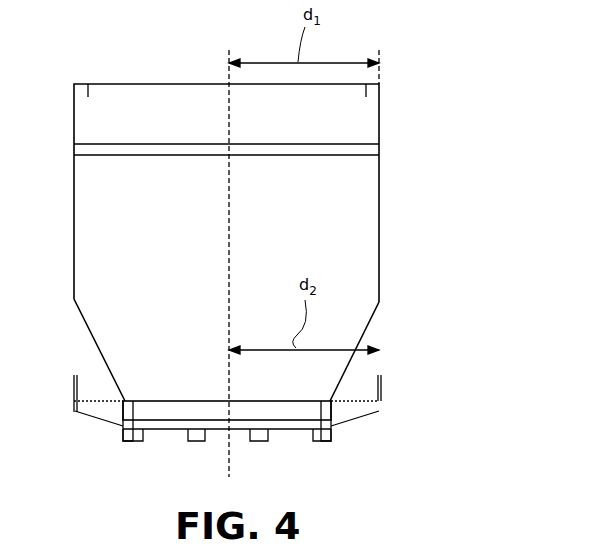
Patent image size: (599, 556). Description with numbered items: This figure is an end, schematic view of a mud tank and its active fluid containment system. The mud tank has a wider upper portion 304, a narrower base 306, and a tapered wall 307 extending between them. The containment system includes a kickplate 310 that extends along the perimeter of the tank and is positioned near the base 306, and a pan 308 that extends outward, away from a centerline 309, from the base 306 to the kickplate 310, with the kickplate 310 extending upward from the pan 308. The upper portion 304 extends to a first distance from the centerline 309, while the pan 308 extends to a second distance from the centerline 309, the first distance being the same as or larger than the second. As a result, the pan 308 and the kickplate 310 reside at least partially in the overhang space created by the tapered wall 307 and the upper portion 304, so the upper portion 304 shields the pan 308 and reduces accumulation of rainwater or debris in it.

The upper portion 304 is at (380, 233).
The base 306 is at (280, 402).
The tapered wall 307 is at (371, 326).
The pan 308 is at (348, 426).
The centerline 309 is at (229, 108).
The kickplate 310 is at (380, 386).